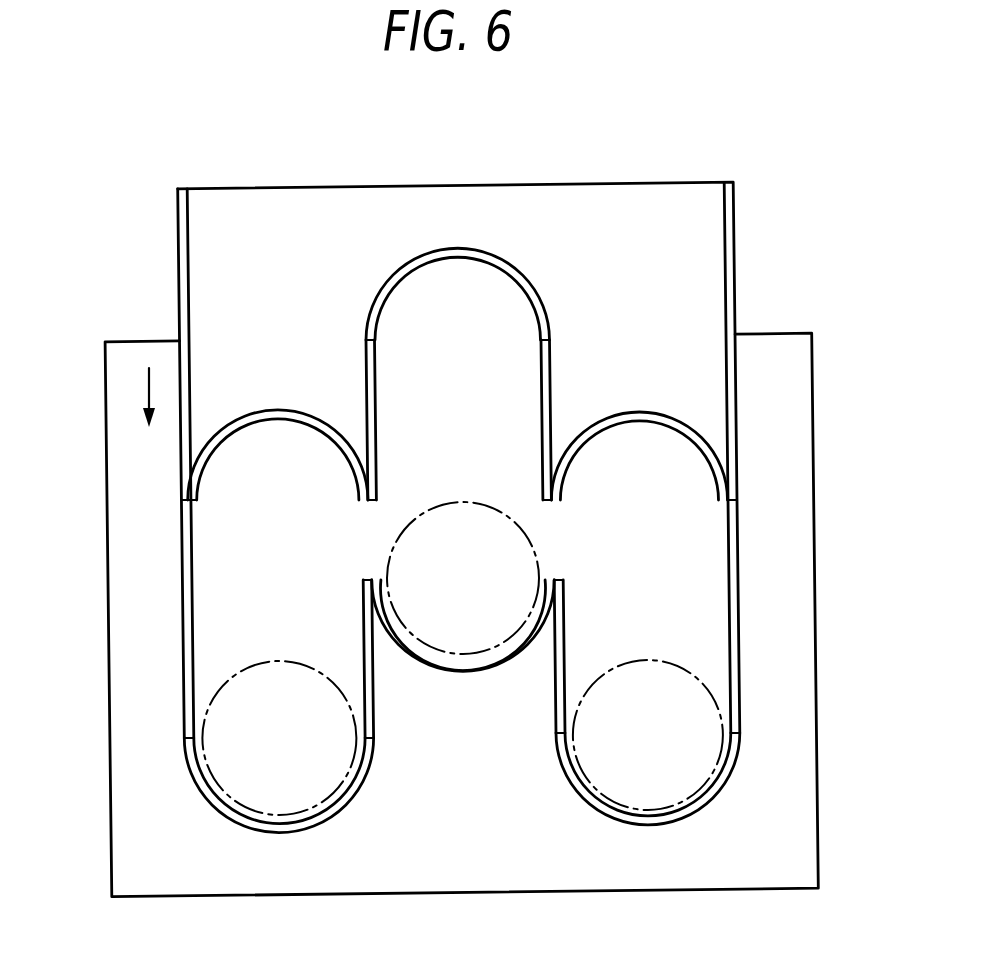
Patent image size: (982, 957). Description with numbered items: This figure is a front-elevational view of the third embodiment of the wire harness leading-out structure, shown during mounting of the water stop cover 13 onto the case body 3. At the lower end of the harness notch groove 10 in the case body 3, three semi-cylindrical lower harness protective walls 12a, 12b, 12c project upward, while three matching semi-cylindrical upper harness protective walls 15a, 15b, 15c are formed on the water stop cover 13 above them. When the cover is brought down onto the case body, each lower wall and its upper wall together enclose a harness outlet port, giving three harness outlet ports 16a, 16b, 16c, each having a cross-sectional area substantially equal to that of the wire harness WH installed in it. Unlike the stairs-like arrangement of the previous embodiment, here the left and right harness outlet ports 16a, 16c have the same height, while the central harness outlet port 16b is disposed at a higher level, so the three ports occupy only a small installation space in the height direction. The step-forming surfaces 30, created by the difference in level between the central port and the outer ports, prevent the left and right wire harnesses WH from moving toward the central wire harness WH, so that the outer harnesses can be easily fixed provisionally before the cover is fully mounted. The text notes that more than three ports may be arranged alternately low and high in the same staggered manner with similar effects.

The case body 3 is at (785, 807).
The harness notch groove 10 is at (203, 557).
The lower harness protective wall 12a is at (278, 812).
The lower harness protective wall 12b is at (463, 654).
The lower harness protective wall 12c is at (648, 807).
The water stop cover 13 is at (390, 427).
The upper harness protective wall 15a is at (277, 411).
The upper harness protective wall 15b is at (457, 249).
The upper harness protective wall 15c is at (648, 413).
The harness outlet port 16a is at (343, 777).
The harness outlet port 16b is at (520, 615).
The harness outlet port 16c is at (708, 773).
The step-forming surface 30 is at (366, 641).
The wire harness WH is at (282, 662).